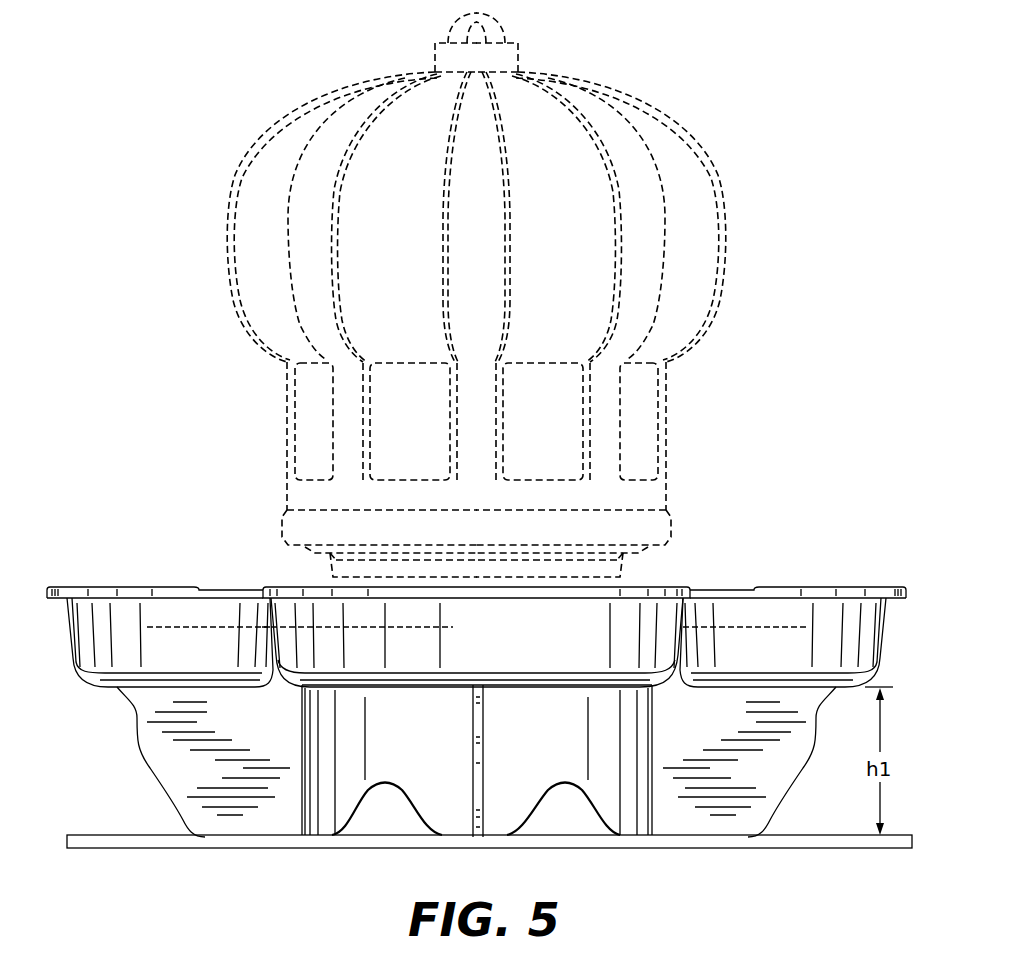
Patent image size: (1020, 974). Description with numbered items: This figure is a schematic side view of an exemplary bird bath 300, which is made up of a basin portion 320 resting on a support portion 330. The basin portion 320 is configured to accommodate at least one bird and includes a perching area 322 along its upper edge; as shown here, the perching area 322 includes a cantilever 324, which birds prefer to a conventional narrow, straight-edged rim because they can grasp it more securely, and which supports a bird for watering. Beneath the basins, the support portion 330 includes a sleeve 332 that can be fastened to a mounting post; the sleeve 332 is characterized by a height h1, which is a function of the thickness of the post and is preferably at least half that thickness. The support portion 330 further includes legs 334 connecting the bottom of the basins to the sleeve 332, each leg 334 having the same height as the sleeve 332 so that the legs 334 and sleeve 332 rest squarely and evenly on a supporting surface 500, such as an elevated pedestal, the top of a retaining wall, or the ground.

The bird bath 300 is at (775, 530).
The basin portion 320 is at (80, 637).
The perching area 322 is at (56, 589).
The cantilever 324 is at (893, 600).
The support portion 330 is at (418, 748).
The sleeve 332 is at (440, 790).
The leg 334 is at (177, 764).
The supporting surface 500 is at (100, 840).